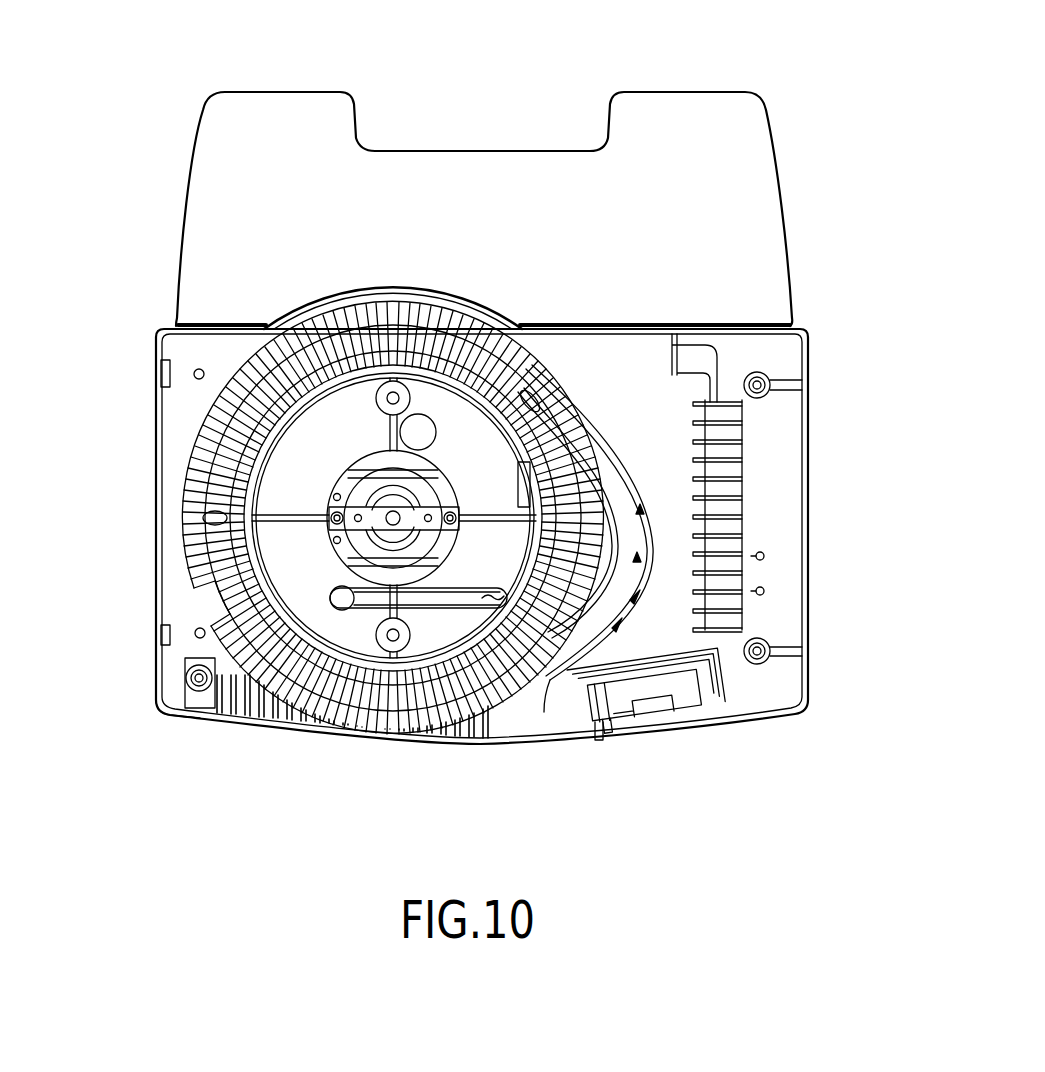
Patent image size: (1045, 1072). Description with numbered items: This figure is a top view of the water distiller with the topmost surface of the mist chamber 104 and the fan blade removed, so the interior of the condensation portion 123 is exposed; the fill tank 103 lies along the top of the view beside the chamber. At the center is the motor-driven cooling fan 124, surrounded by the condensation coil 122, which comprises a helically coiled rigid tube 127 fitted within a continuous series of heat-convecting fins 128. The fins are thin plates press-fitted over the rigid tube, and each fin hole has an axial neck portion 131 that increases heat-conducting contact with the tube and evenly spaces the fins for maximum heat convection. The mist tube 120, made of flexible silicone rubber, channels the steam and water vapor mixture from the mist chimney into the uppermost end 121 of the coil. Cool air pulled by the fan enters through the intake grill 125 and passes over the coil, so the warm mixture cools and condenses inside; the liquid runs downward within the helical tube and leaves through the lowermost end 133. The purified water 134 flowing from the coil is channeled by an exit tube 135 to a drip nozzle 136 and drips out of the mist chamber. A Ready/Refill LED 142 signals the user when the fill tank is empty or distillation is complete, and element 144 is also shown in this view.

The fill tank 103 is at (690, 86).
The mist chamber 104 is at (142, 329).
The mist tube 120 is at (433, 620).
The uppermost end 121 is at (488, 603).
The condensation coil 122 is at (180, 583).
The condensation portion 123 is at (160, 712).
The motor-driven cooling fan 124 is at (325, 496).
The intake grill 125 is at (262, 720).
The helically coiled rigid tube 127 is at (211, 421).
The heat-convecting fins 128 is at (180, 473).
The axial neck portion 131 is at (198, 606).
The lowermost end 133 is at (563, 694).
The purified water 134 is at (643, 601).
The exit tube 135 is at (653, 513).
The drip nozzle 136 is at (536, 388).
The Ready/Refill LED 142 is at (613, 764).
The terminal block 144 is at (704, 742).